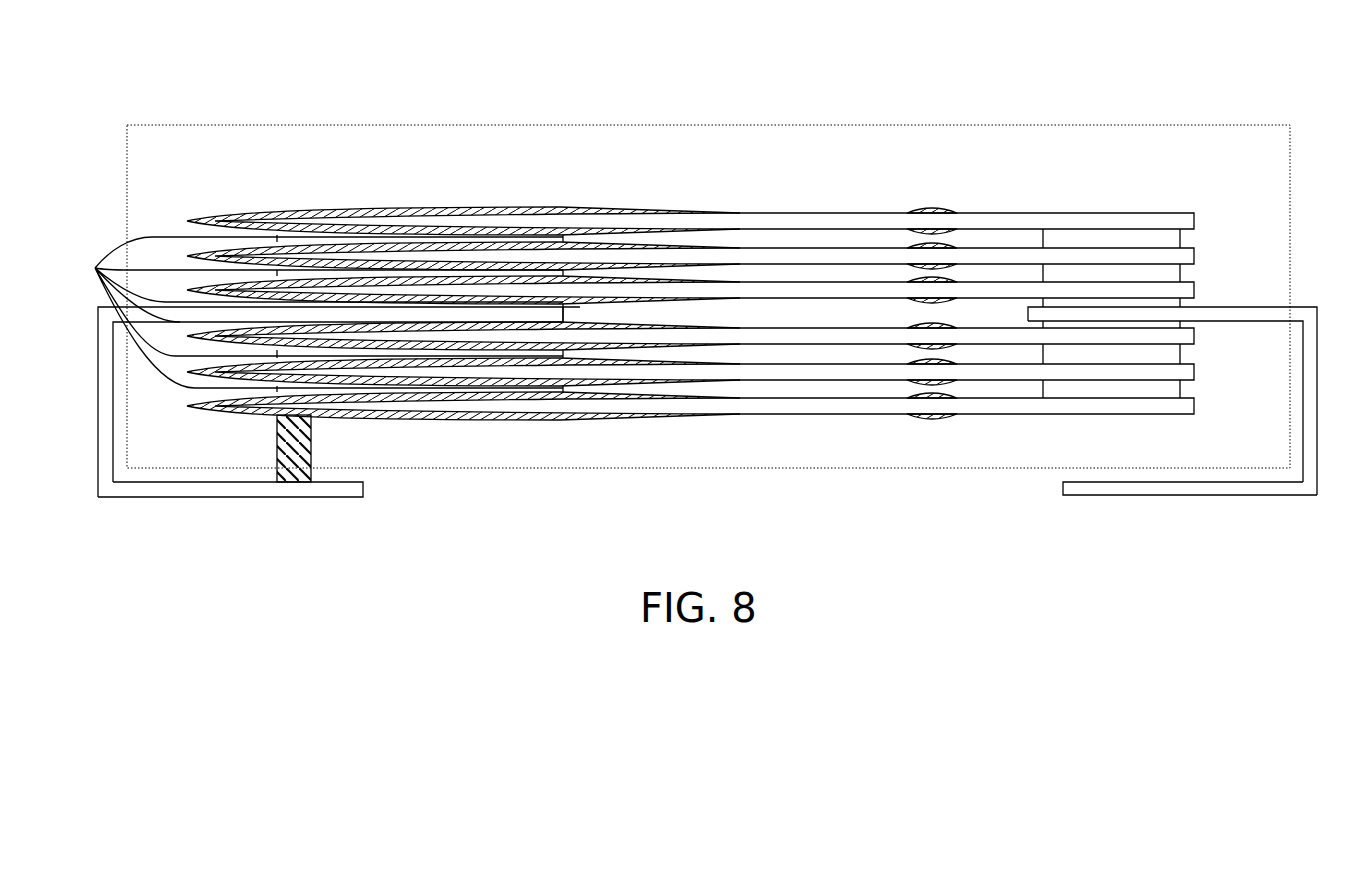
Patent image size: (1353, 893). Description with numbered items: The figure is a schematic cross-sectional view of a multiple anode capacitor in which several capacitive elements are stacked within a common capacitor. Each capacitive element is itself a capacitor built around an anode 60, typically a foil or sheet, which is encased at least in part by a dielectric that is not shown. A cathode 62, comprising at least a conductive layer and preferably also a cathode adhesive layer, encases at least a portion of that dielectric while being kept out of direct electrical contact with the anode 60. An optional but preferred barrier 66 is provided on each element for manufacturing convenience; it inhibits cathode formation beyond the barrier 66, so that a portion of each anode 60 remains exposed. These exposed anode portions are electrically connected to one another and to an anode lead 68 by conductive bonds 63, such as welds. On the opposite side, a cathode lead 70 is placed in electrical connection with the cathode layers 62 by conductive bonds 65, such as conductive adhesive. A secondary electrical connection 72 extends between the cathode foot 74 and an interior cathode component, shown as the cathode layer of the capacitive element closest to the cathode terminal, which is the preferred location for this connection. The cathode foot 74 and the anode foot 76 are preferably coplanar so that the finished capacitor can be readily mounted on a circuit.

The anode 60 is at (847, 290).
The cathode 62 is at (548, 277).
The conductive bonds 63 is at (1152, 302).
The conductive bonds 65 is at (95, 268).
The barrier 66 is at (935, 210).
The anode lead 68 is at (1318, 402).
The cathode lead 70 is at (98, 430).
The secondary electrical connection 72 is at (311, 448).
The cathode foot 74 is at (200, 497).
The anode foot 76 is at (1270, 497).